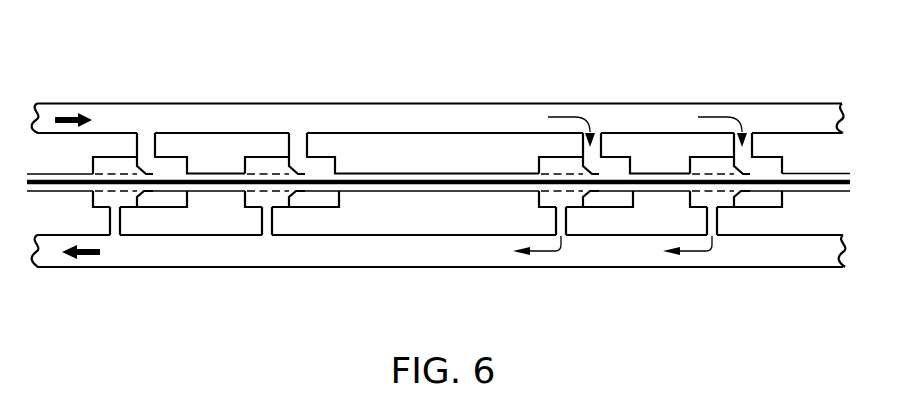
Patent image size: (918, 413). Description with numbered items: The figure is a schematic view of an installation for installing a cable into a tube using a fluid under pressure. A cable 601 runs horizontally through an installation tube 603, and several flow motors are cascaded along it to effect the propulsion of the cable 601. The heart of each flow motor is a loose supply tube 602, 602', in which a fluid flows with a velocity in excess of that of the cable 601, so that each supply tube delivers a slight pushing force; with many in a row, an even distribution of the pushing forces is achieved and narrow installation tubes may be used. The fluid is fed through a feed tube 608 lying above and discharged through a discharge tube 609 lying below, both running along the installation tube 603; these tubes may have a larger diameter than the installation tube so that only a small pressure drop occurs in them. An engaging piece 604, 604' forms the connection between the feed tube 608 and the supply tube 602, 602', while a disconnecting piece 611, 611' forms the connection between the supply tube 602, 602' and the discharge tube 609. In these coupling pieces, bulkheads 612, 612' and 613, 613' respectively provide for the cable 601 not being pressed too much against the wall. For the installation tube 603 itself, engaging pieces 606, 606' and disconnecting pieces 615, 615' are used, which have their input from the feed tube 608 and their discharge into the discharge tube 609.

The cable 601 is at (389, 184).
The supply tube 602 is at (230, 117).
The supply tube 602' is at (675, 117).
The installation tube 603 is at (53, 192).
The engaging piece 604 is at (157, 260).
The engaging piece 604' is at (593, 260).
The engaging piece 606 is at (451, 117).
The engaging piece 606' is at (782, 117).
The feed tube 608 is at (87, 103).
The discharge tube 609 is at (129, 267).
The disconnecting piece 611 is at (268, 110).
The disconnecting piece 611' is at (707, 110).
The bulkhead 612 is at (159, 118).
The bulkhead 612' is at (575, 260).
The bulkhead 613 is at (264, 268).
The bulkhead 613' is at (707, 260).
The disconnecting piece 615 is at (116, 125).
The disconnecting piece 615' is at (550, 125).